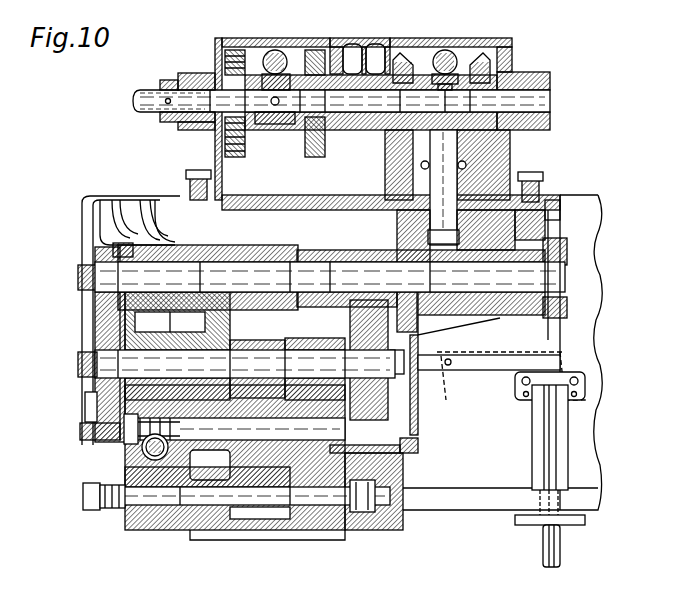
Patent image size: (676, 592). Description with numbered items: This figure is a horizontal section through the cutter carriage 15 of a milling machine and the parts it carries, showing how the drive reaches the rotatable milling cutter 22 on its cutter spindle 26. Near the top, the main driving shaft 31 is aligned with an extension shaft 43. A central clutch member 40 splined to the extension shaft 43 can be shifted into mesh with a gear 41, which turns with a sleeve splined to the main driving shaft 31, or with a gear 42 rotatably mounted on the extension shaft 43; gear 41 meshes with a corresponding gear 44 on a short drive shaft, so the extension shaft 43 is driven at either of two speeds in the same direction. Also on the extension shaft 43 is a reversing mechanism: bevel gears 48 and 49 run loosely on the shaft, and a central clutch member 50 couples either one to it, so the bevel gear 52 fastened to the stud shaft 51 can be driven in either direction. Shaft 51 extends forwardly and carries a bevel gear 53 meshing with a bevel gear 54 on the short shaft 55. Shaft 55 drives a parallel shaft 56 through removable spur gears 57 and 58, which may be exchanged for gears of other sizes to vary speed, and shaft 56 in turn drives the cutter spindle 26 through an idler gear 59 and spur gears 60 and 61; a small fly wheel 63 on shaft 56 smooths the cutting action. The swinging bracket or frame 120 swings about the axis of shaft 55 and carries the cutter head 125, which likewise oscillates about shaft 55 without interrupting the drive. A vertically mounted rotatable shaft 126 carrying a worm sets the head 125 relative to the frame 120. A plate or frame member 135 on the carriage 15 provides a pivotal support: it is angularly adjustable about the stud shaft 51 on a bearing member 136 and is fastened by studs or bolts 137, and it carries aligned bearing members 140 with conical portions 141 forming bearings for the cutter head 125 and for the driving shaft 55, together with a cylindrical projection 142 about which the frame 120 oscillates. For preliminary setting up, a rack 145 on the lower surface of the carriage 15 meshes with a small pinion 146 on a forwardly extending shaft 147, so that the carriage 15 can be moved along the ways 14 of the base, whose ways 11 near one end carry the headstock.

The ways 11 is at (226, 10).
The ways 14 is at (599, 212).
The cutter carriage 15 is at (568, 255).
The rotatable milling cutter 22 is at (110, 524).
The cutter spindle 26 is at (200, 512).
The main driving shaft 31 is at (146, 97).
The central clutch member 40 is at (272, 128).
The gear 41 is at (246, 130).
The gear 42 is at (315, 158).
The extension shaft 43 is at (548, 96).
The gear 44 is at (238, 52).
The bevel gear 48 is at (405, 58).
The bevel gear 49 is at (490, 58).
The central clutch member 50 is at (462, 56).
The shaft 51 is at (400, 232).
The bevel gear 52 is at (400, 160).
The bevel gear 53 is at (410, 250).
The bevel gear 54 is at (436, 322).
The short shaft 55 is at (312, 270).
The shaft 56 is at (310, 350).
The spur gear 57 is at (98, 250).
The spur gear 58 is at (85, 404).
The idler gear 59 is at (245, 464).
The spur gear 60 is at (270, 340).
The spur gear 61 is at (250, 520).
The fly wheel 63 is at (392, 420).
The swinging bracket or frame 120 is at (145, 200).
The cutter head 125 is at (222, 202).
The vertically mounted rotatable shaft 126 is at (142, 450).
The plate or frame member 135 is at (572, 202).
The bearing member 136 is at (516, 188).
The studs or bolts 137 is at (193, 176).
The bearing members 140 is at (286, 258).
The conical portions 141 is at (230, 311).
The cylindrical projection 142 is at (116, 200).
The rack 145 is at (474, 372).
The pinion 146 is at (587, 380).
The shaft 147 is at (560, 420).